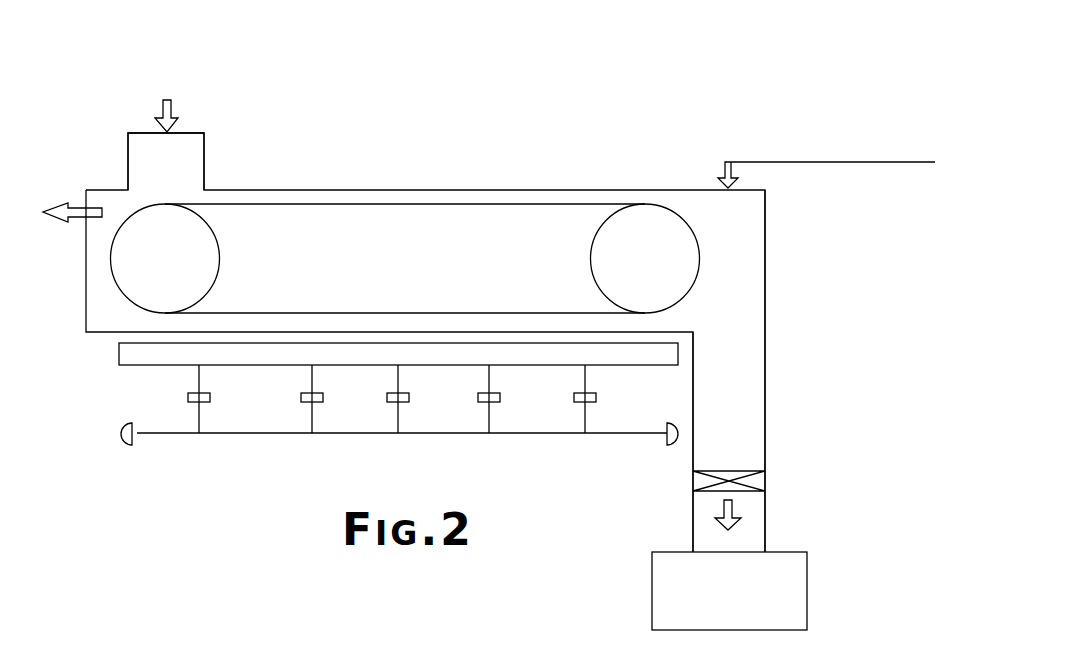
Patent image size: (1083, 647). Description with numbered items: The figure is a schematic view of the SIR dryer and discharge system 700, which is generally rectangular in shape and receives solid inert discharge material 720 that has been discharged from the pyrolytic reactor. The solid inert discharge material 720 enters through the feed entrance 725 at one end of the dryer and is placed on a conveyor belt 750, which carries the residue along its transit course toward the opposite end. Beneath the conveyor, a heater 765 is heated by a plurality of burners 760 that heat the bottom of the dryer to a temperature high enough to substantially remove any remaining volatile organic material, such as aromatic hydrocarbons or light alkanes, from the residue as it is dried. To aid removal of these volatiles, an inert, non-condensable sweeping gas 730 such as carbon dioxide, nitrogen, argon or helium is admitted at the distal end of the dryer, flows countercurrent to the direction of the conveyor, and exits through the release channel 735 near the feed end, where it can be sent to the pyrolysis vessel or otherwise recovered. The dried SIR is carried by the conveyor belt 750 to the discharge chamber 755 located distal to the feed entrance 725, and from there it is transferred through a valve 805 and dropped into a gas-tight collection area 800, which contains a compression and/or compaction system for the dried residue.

The SIR dryer and discharge system 700 is at (459, 110).
The solid inert discharge material 720 is at (178, 107).
The feed entrance 725 is at (204, 158).
The sweeping gas 730 is at (882, 162).
The release channel 735 is at (78, 214).
The conveyor belt 750 is at (522, 203).
The discharge chamber 755 is at (743, 372).
The burners 760 is at (390, 400).
The heater 765 is at (155, 350).
The gas-tight collection area 800 is at (779, 558).
The valve 805 is at (740, 484).